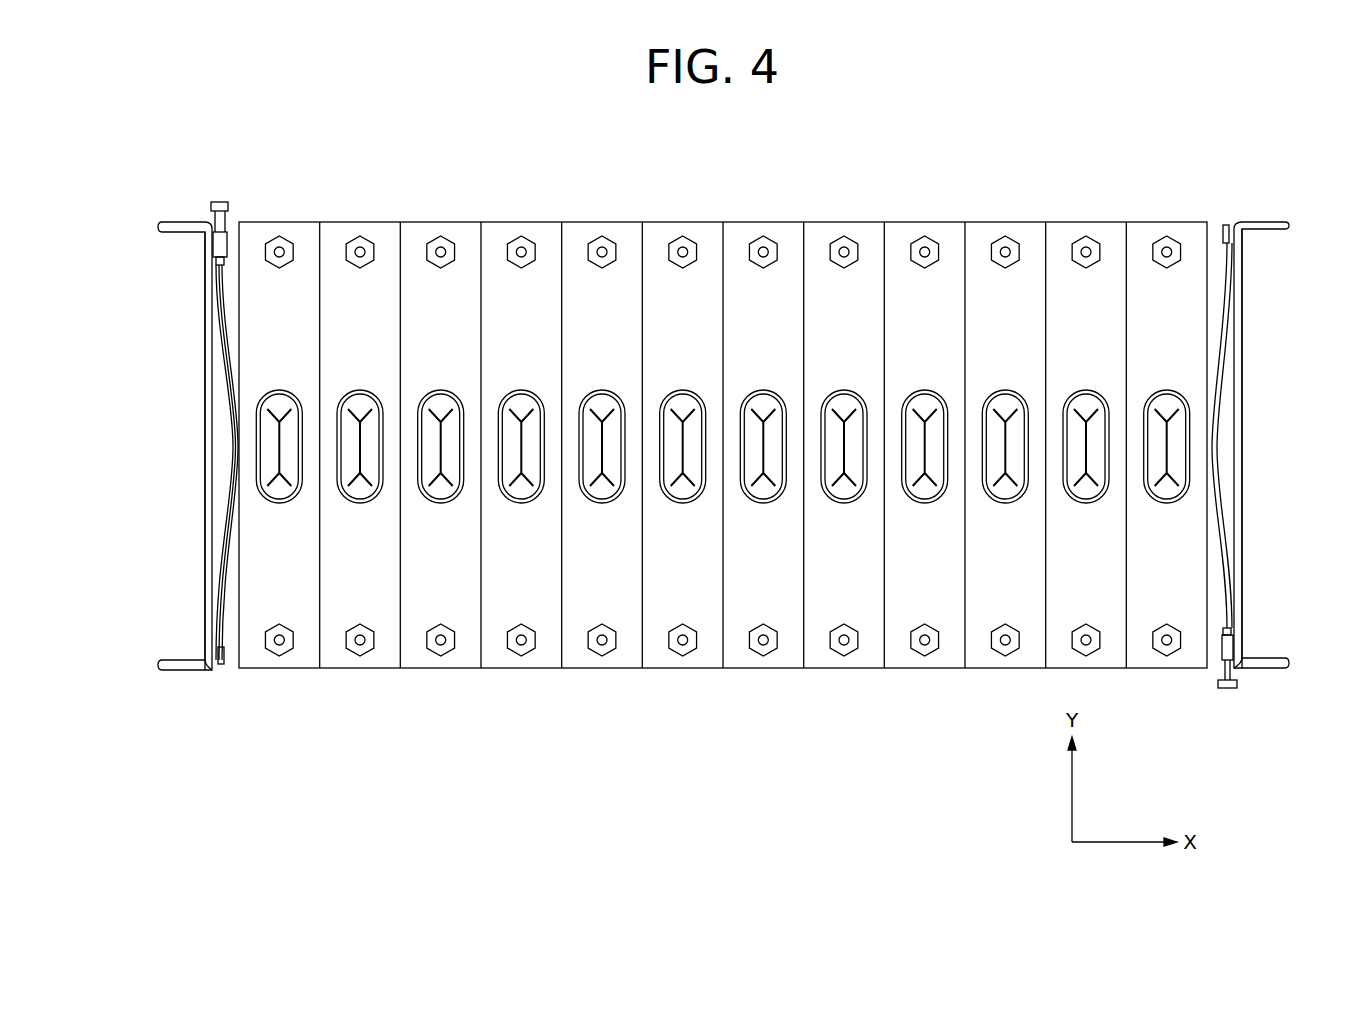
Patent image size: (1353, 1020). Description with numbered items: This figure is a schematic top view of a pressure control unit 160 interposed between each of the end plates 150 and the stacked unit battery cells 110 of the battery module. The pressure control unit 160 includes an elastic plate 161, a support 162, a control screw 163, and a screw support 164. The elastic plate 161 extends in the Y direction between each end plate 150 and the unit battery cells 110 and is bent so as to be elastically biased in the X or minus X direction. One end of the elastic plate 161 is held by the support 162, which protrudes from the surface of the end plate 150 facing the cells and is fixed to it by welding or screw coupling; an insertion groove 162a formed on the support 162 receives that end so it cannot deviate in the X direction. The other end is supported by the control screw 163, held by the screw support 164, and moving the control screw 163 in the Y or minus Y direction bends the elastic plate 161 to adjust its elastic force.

The unit battery cells 110 is at (1090, 230).
The end plate 150 is at (207, 443).
The pressure control unit 160 is at (1282, 399).
The elastic plate 161 is at (222, 346).
The support 162 is at (214, 668).
The insertion groove 162a is at (1231, 240).
The control screw 163 is at (216, 202).
The screw support 164 is at (218, 244).